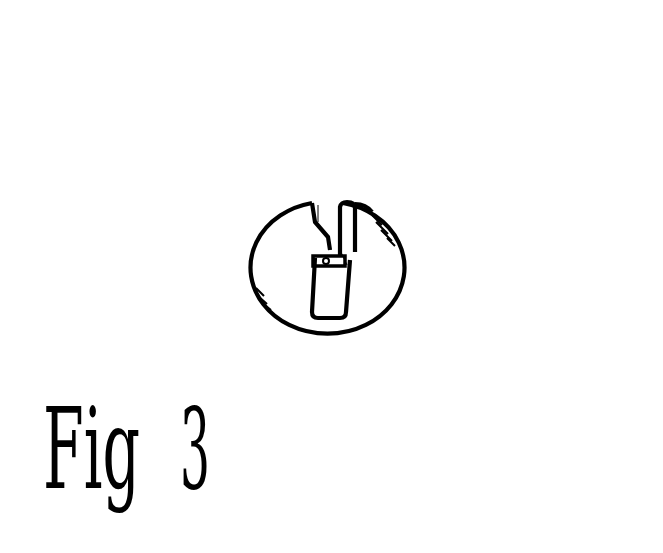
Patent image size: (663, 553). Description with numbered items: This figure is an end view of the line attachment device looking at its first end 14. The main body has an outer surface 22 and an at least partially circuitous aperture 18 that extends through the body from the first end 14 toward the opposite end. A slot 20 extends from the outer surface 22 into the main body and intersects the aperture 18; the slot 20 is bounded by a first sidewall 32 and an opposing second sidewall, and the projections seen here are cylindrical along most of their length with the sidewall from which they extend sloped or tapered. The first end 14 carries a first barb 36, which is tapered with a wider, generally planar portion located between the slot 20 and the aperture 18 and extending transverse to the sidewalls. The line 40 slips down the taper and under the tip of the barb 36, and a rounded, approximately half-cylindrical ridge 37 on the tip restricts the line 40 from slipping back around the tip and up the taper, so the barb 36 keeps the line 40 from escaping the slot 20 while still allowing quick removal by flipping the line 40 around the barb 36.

The first end 14 is at (365, 282).
The aperture 18 is at (318, 268).
The slot 20 is at (327, 207).
The outer surface 22 is at (273, 220).
The first sidewall 32 is at (357, 211).
The first barb 36 is at (330, 251).
The ridge 37 is at (335, 257).
The line 40 is at (332, 258).